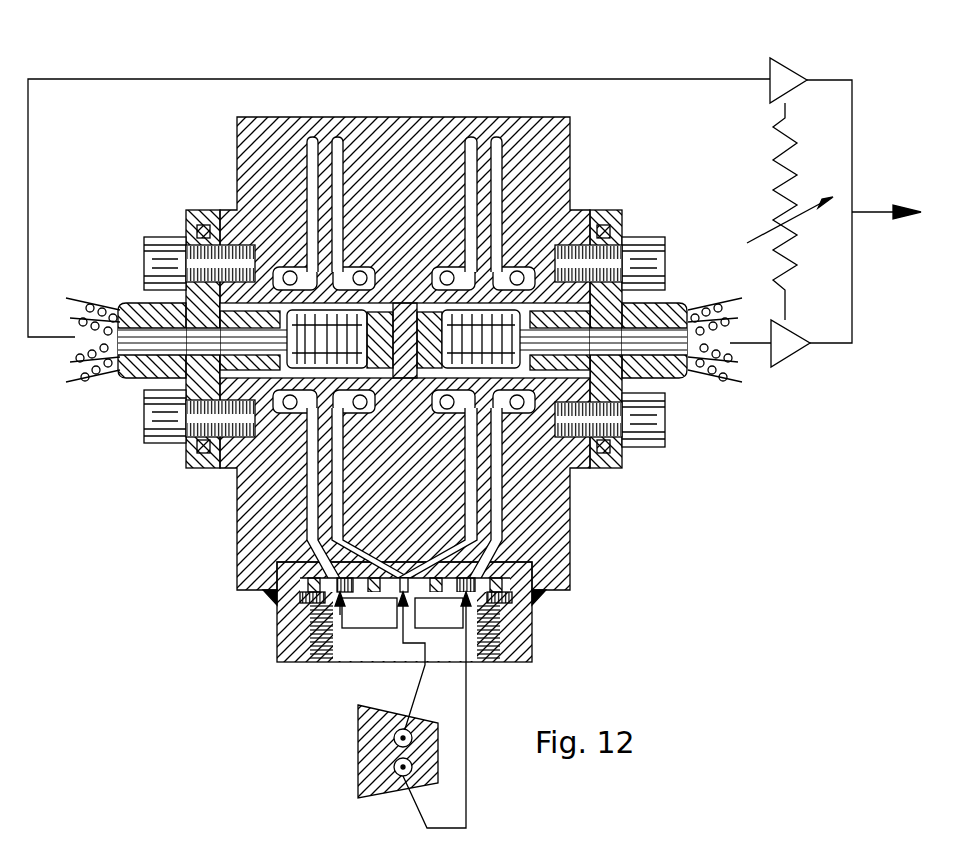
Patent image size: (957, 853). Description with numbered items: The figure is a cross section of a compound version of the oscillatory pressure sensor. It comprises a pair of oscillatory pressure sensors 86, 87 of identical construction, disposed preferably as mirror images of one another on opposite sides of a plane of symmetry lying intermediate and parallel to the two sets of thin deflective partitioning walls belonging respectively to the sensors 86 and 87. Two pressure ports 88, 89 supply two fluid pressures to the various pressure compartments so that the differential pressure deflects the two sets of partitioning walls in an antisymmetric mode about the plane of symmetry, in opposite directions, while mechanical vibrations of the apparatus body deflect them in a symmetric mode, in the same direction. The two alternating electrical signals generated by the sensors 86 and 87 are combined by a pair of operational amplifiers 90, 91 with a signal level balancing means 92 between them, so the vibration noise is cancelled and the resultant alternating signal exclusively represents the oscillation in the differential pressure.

The oscillatory pressure sensor 86 is at (137, 380).
The oscillatory pressure sensor 87 is at (668, 383).
The pressure port 88 is at (338, 600).
The pressure port 89 is at (400, 597).
The operational amplifier 90 is at (790, 62).
The operational amplifier 91 is at (797, 352).
The signal level balancing means 92 is at (800, 225).